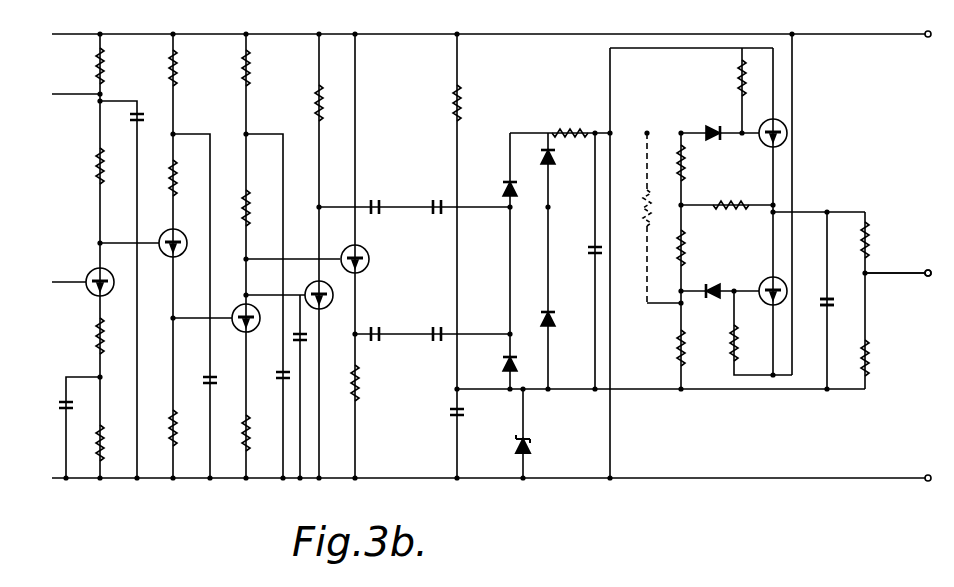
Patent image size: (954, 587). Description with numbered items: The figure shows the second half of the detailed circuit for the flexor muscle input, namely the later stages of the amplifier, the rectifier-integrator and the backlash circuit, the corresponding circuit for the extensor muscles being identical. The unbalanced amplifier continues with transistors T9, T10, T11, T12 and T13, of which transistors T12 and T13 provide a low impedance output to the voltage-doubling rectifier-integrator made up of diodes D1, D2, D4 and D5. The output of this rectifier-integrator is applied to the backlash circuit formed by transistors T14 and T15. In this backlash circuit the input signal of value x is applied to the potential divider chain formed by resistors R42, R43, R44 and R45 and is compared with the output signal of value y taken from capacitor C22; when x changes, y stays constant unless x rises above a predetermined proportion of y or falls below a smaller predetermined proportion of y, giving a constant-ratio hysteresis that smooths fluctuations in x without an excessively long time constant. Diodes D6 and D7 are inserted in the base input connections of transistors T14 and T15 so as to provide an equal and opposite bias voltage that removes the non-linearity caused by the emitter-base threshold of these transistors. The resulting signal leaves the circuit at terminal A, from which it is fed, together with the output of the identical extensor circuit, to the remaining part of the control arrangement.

The transistor T9 is at (105, 288).
The transistor T10 is at (179, 251).
The transistor T11 is at (253, 328).
The transistor T12 is at (326, 305).
The transistor T13 is at (365, 267).
The transistor T14 is at (787, 136).
The transistor T15 is at (764, 283).
The diode D1 is at (495, 184).
The diode D2 is at (497, 371).
The diode D4 is at (536, 161).
The diode D5 is at (558, 332).
The diode D6 is at (720, 123).
The diode D7 is at (720, 302).
The resistor R42 is at (576, 123).
The resistor R43 is at (695, 163).
The resistor R44 is at (695, 248).
The resistor R45 is at (658, 348).
The capacitor C22 is at (836, 308).
The terminal A is at (898, 286).